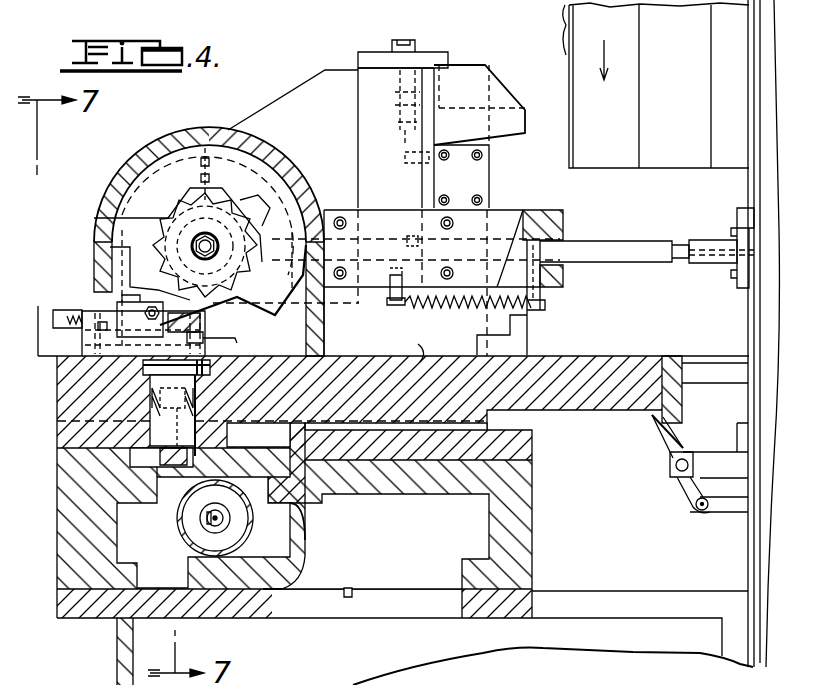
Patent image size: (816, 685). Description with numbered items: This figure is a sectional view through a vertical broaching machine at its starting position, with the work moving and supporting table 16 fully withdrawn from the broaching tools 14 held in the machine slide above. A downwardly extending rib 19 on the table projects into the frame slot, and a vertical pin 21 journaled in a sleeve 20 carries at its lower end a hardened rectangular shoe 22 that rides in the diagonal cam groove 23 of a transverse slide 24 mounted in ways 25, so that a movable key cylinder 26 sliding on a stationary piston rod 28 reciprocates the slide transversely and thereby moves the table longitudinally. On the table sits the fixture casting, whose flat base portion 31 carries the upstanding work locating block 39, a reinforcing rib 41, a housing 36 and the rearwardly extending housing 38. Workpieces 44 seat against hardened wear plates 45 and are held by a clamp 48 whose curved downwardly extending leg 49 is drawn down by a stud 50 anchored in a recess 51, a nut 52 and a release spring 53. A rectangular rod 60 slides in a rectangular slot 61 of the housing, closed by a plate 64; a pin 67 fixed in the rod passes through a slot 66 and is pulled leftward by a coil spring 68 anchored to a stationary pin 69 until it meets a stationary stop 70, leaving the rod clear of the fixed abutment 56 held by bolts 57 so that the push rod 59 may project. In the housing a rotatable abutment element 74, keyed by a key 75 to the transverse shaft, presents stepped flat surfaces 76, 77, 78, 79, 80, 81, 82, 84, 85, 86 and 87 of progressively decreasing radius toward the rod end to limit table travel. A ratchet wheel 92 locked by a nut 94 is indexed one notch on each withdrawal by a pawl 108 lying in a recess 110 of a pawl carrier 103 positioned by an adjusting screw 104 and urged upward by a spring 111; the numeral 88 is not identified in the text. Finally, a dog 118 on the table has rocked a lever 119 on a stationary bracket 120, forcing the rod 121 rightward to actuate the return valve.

The broaching tools 14 is at (566, 5).
The work moving and supporting table 16 is at (62, 398).
The rib 19 is at (62, 437).
The sleeve 20 is at (195, 400).
The vertical pin 21 is at (192, 390).
The shoe 22 is at (130, 457).
The cam groove 23 is at (160, 470).
The transverse slide 24 is at (305, 508).
The ways 25 is at (203, 505).
The movable key cylinder 26 is at (200, 530).
The stationary piston rod 28 is at (292, 528).
The base portion 31 is at (432, 366).
The housing 36 is at (108, 184).
The housing 38 is at (530, 210).
The work locating block 39 is at (362, 82).
The reinforcing rib 41 is at (293, 100).
The workpieces 44 is at (519, 118).
The wear plates 45 is at (419, 172).
The clamp 48 is at (372, 52).
The downwardly extending leg 49 is at (440, 66).
The stud 50 is at (395, 122).
The recess 51 is at (400, 93).
The nut 52 is at (408, 38).
The spring 53 is at (400, 106).
The fixed abutment 56 is at (696, 263).
The bolts 57 is at (738, 214).
The push rod 59 is at (680, 262).
The rod 60 is at (586, 261).
The rectangular slot 61 is at (566, 240).
The plate 64 is at (488, 208).
The slot 66 is at (563, 286).
The pin 67 is at (541, 306).
The coil spring 68 is at (446, 300).
The stationary pin 69 is at (388, 306).
The stationary stop 70 is at (522, 349).
The rotatable abutment element 74 is at (150, 230).
The key 75 is at (207, 227).
The flat surface 76 is at (305, 248).
The flat surface 77 is at (298, 273).
The flat surface 78 is at (233, 289).
The flat surface 79 is at (225, 344).
The flat surface 80 is at (200, 323).
The flat surface 81 is at (160, 262).
The flat surface 82 is at (150, 246).
The flat surface 84 is at (178, 257).
The flat surface 85 is at (187, 174).
The flat surface 86 is at (261, 228).
The flat surface 87 is at (267, 196).
The pawl spring 88 is at (127, 203).
The ratchet wheel 92 is at (94, 218).
The nut 94 is at (205, 235).
The pawl carrier 103 is at (120, 302).
The adjusting screw 104 is at (60, 328).
The pawl 108 is at (187, 302).
The recess 110 is at (157, 326).
The spring 111 is at (200, 311).
The dog 118 is at (672, 398).
The lever 119 is at (664, 455).
The stationary bracket 120 is at (716, 434).
The rod 121 is at (730, 514).